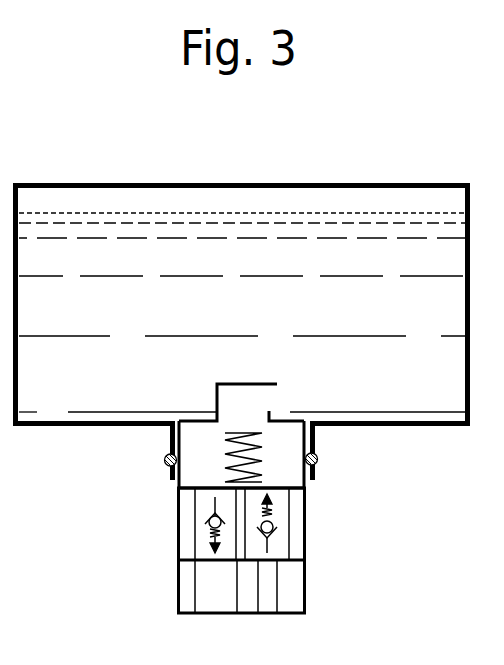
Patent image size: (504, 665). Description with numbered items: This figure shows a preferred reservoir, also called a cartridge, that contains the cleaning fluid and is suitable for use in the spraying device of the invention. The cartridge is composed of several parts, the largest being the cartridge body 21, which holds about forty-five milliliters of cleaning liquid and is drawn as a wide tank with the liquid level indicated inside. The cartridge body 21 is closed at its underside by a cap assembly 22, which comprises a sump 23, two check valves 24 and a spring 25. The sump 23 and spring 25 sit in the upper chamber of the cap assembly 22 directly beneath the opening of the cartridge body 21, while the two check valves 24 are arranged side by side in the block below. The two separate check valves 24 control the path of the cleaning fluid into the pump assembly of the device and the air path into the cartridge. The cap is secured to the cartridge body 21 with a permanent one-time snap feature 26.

The cartridge body 21 is at (397, 183).
The cap assembly 22 is at (167, 588).
The sump 23 is at (280, 441).
The check valves 24 is at (293, 532).
The spring 25 is at (232, 438).
The permanent one-time snap feature 26 is at (318, 460).